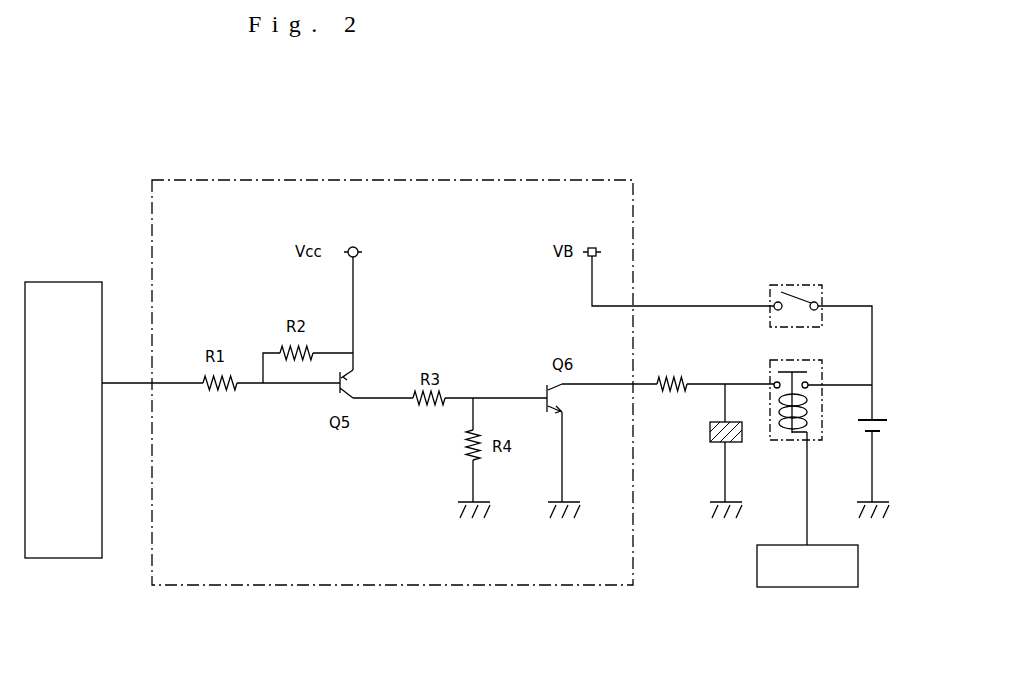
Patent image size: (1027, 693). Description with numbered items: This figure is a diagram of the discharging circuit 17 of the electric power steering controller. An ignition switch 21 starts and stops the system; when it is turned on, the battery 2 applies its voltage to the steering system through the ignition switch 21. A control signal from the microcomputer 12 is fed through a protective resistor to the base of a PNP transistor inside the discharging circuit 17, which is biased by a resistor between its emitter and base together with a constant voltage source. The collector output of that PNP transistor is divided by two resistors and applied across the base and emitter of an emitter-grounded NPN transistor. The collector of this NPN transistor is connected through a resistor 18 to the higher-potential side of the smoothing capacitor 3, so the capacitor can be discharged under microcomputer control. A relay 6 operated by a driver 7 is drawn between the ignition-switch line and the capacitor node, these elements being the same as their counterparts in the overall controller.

The microcomputer 12 is at (45, 559).
The discharging circuit 17 is at (407, 585).
The resistor 18 is at (676, 377).
The ignition switch 21 is at (784, 284).
The battery 2 is at (891, 427).
The smoothing capacitor 3 is at (745, 440).
The relay 6 is at (819, 441).
The driver 7 is at (807, 588).